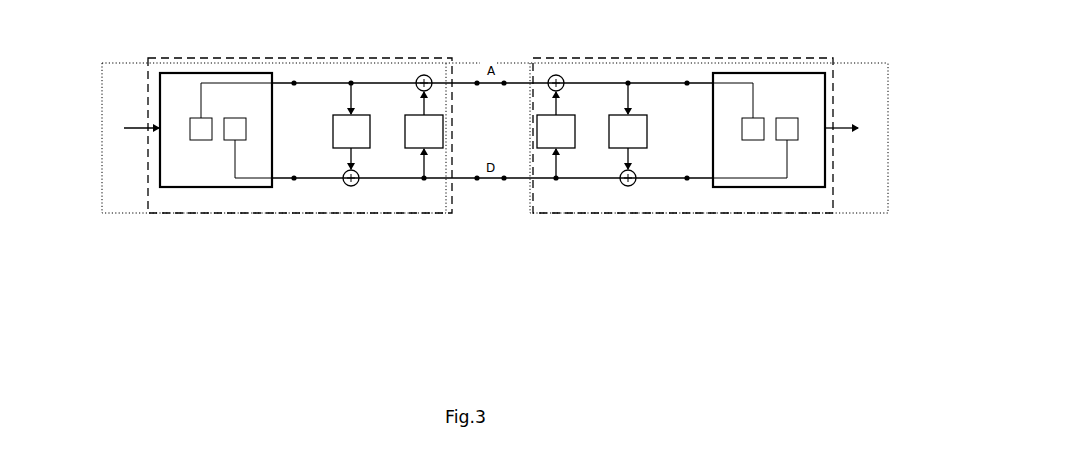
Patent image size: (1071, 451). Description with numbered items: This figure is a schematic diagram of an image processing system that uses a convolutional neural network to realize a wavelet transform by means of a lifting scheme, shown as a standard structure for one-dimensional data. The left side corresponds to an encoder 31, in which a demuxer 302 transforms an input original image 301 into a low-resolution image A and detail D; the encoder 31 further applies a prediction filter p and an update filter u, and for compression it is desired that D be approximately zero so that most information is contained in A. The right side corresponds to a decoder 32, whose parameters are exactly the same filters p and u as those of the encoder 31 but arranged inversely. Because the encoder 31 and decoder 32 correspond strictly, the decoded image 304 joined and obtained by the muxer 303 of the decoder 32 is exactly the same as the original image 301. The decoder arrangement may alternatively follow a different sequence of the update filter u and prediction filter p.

The encoder 31 is at (232, 58).
The decoder 32 is at (628, 58).
The original image 301 is at (101, 133).
The demuxer 302 is at (210, 187).
The muxer 303 is at (758, 187).
The decoded image 304 is at (871, 134).